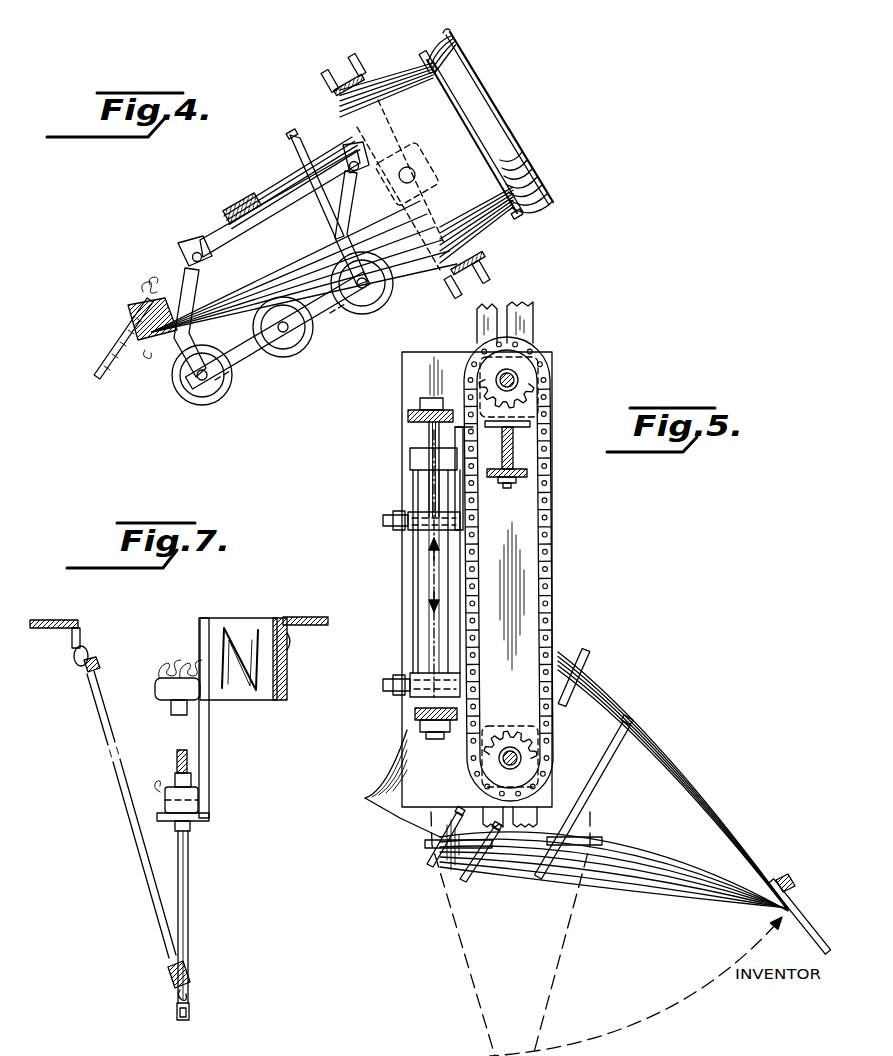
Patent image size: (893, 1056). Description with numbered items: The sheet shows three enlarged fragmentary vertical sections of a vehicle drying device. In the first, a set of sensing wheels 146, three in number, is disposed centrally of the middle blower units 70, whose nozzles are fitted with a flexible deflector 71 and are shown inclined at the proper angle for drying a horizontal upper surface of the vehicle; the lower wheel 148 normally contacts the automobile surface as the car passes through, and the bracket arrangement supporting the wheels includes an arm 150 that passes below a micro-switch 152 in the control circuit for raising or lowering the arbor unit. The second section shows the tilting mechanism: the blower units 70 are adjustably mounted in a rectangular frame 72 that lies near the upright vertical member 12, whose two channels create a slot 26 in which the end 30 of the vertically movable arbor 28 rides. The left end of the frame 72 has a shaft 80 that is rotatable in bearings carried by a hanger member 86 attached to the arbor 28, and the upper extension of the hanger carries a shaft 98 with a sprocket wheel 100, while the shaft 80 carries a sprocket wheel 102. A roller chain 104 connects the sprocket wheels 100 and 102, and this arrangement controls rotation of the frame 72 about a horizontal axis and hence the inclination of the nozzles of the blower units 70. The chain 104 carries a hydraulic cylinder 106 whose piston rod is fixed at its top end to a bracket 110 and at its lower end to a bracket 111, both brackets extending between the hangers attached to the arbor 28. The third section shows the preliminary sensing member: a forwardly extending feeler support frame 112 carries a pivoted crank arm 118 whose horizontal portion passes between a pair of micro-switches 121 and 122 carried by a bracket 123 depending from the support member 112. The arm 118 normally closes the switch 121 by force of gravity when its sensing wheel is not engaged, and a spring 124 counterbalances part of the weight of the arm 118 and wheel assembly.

In FIG. 5, the vertical member 12 is at (542, 314).
In FIG. 5, the slot 26 is at (506, 304).
In FIG. 5, the arbor 28 is at (526, 453).
In FIG. 5, the end of arbor 30 is at (548, 443).
In FIG. 4, the blower unit 70 is at (450, 151).
In FIG. 5, the blower unit 70 is at (603, 713).
In FIG. 4, the flexible deflector 71 is at (107, 358).
In FIG. 5, the flexible deflector 71 is at (810, 917).
In FIG. 4, the rectangular frame 72 is at (357, 53).
In FIG. 5, the rectangular frame 72 is at (574, 650).
In FIG. 5, the shaft 80 is at (528, 757).
In FIG. 5, the hanger member 86 is at (400, 397).
In FIG. 5, the shaft 98 is at (521, 377).
In FIG. 5, the sprocket wheel 100 is at (523, 390).
In FIG. 5, the sprocket wheel 102 is at (560, 708).
In FIG. 5, the roller chain 104 is at (548, 447).
In FIG. 5, the hydraulic cylinder 106 is at (417, 632).
In FIG. 5, the bracket 110 is at (420, 423).
In FIG. 5, the bracket 111 is at (417, 713).
In FIG. 7, the feeler support frame 112 is at (74, 621).
In FIG. 7, the crank arm 118 is at (177, 755).
In FIG. 7, the micro-switch 121 is at (198, 802).
In FIG. 7, the micro-switch 122 is at (193, 692).
In FIG. 7, the bracket 123 is at (209, 758).
In FIG. 7, the spring 124 is at (120, 790).
In FIG. 4, the set of sensing wheels 146 is at (322, 338).
In FIG. 4, the lower wheel 148 is at (233, 383).
In FIG. 4, the arm 150 is at (165, 358).
In FIG. 4, the micro-switch 152 is at (160, 320).